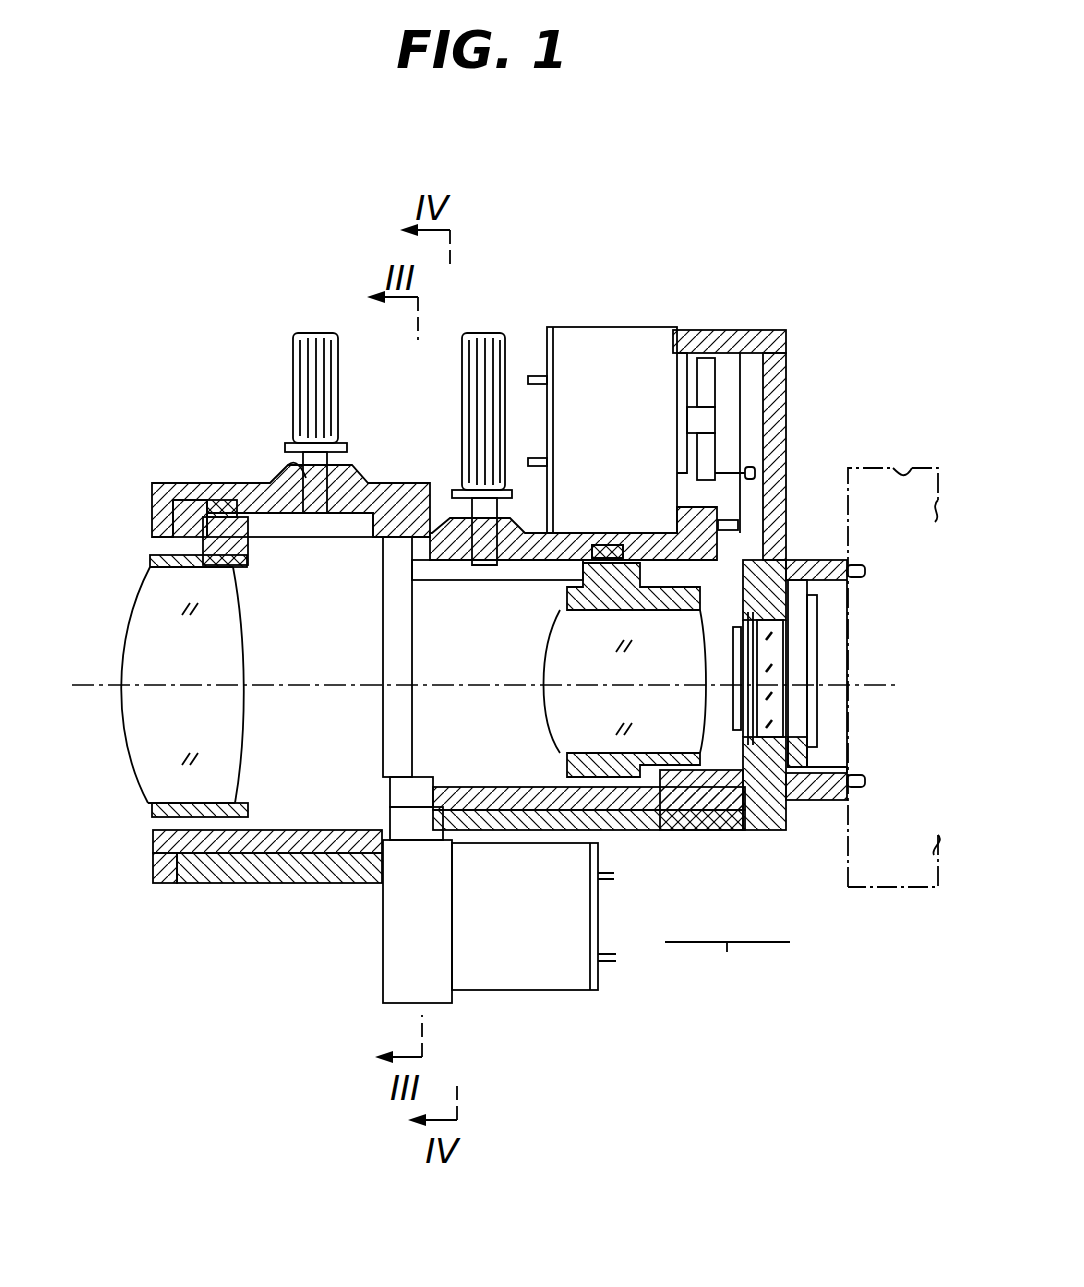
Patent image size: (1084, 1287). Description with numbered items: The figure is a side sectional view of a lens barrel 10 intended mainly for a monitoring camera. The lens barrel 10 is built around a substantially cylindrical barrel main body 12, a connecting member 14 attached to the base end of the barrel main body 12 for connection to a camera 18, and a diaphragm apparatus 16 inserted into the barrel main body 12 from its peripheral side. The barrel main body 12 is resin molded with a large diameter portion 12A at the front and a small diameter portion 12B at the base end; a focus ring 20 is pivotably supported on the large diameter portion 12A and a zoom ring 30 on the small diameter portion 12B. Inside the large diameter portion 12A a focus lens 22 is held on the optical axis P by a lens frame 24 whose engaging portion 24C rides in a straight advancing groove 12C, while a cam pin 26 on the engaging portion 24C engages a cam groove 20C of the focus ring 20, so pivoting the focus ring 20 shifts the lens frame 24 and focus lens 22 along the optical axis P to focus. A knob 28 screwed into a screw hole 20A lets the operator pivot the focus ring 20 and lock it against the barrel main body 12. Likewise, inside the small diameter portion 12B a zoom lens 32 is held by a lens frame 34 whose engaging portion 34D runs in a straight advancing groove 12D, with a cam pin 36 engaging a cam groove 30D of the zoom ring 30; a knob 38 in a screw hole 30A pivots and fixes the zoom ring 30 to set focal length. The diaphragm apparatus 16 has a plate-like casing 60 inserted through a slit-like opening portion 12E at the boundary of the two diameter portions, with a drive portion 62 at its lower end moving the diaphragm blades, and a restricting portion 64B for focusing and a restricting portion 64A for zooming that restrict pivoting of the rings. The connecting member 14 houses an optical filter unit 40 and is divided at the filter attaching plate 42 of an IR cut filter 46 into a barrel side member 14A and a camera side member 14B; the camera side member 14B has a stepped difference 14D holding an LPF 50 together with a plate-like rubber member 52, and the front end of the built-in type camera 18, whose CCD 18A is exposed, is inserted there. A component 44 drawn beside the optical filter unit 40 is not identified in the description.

The lens barrel 10 is at (533, 297).
The barrel main body 12 is at (138, 857).
The large diameter portion 12A is at (230, 856).
The small diameter portion 12B is at (647, 802).
The straight advancing groove 12C is at (345, 530).
The straight advancing groove 12D is at (520, 580).
The opening portion 12E is at (345, 858).
The connecting member 14 is at (793, 660).
The barrel side member 14A is at (705, 832).
The camera side member 14B is at (757, 832).
The stepped difference 14D is at (795, 718).
The diaphragm apparatus 16 is at (365, 970).
The camera 18 is at (900, 468).
The CCD 18A is at (830, 770).
The focus ring 20 is at (392, 472).
The screw hole 20A is at (303, 470).
The cam groove 20C is at (223, 500).
The focus lens 22 is at (136, 728).
The lens frame 24 is at (148, 558).
The engaging portion 24C is at (248, 540).
The cam pin 26 is at (200, 500).
The knob 28 is at (293, 352).
The zoom ring 30 is at (570, 518).
The screw hole 30A is at (487, 560).
The cam groove 30D is at (614, 543).
The zoom lens 32 is at (552, 706).
The lens frame 34 is at (591, 670).
The engaging portion 34D is at (575, 600).
The cam pin 36 is at (606, 543).
The knob 38 is at (462, 355).
The optical filter unit 40 is at (745, 360).
The filter attaching plate 42 is at (770, 495).
The motor 44 is at (641, 356).
The IR cut filter 46 is at (733, 650).
The LPF 50 is at (765, 600).
The rubber member 52 is at (777, 830).
The casing 60 is at (383, 643).
The drive portion 62 is at (532, 988).
The restricting portion for zooming 64A is at (400, 808).
The restricting portion for focusing 64B is at (415, 775).
The optical axis P is at (84, 684).